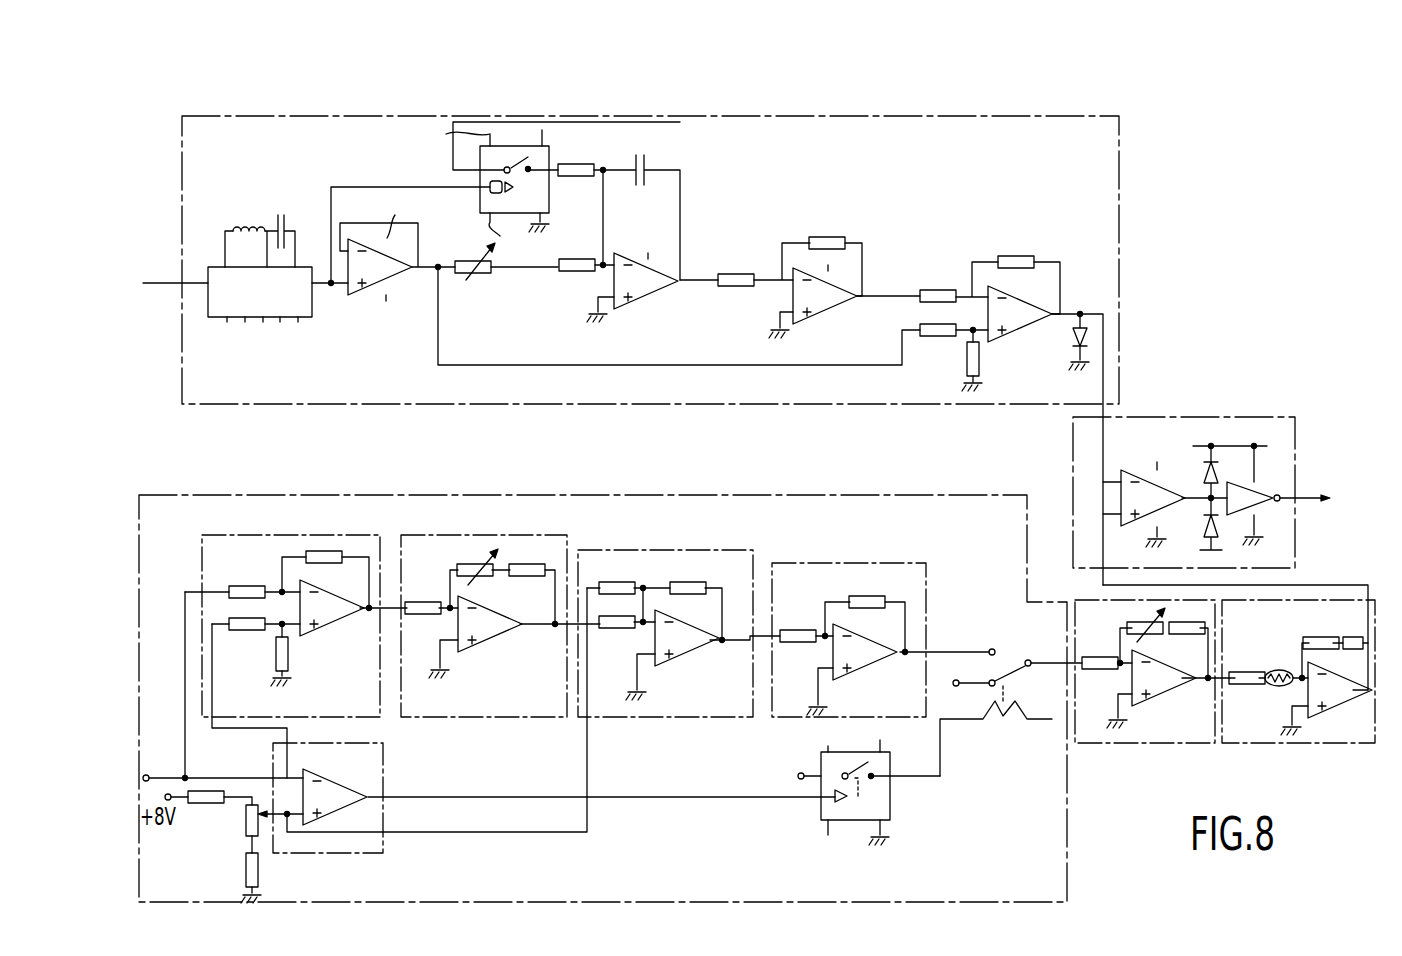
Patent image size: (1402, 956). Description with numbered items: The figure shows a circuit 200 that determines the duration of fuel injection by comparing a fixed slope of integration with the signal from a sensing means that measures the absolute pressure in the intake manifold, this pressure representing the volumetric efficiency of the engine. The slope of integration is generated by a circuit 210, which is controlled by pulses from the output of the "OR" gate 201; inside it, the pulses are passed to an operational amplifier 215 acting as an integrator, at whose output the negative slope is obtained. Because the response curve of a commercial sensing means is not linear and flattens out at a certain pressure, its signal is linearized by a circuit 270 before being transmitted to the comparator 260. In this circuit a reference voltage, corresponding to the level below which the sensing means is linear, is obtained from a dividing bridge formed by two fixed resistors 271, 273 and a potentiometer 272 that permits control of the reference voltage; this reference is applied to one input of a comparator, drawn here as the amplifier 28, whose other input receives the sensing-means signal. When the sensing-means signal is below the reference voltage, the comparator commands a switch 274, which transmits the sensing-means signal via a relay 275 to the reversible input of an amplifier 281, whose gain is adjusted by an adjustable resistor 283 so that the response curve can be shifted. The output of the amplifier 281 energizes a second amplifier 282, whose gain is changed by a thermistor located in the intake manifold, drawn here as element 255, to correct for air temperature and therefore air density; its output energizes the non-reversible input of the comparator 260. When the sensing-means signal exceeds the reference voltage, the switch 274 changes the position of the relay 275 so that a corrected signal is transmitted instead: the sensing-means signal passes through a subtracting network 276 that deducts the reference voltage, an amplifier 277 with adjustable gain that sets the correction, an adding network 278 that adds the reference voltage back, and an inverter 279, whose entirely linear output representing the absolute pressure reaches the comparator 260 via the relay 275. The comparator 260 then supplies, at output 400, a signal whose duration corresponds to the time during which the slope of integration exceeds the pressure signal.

The circuit 200 is at (1160, 233).
The "OR" gate 201 is at (175, 270).
The circuit 210 is at (1122, 148).
The operational amplifier 215 is at (634, 298).
The comparator 260 is at (1148, 425).
The output signal 400 is at (1308, 481).
The circuit 270 is at (598, 493).
The subtracting network 276 is at (300, 528).
The amplifier with adjustable gain 277 is at (487, 513).
The adding network 278 is at (650, 532).
The inverter 279 is at (857, 563).
The reference amplifier 28 is at (385, 752).
The fixed resistor 273 is at (208, 792).
The potentiometer 272 is at (247, 826).
The fixed resistor 271 is at (262, 872).
The switch 274 is at (884, 800).
The relay 275 is at (1003, 721).
The adjustable resistor 283 is at (1134, 630).
The amplifier 281 is at (1130, 748).
The second amplifier 282 is at (1243, 748).
The lamp 255 is at (1270, 686).